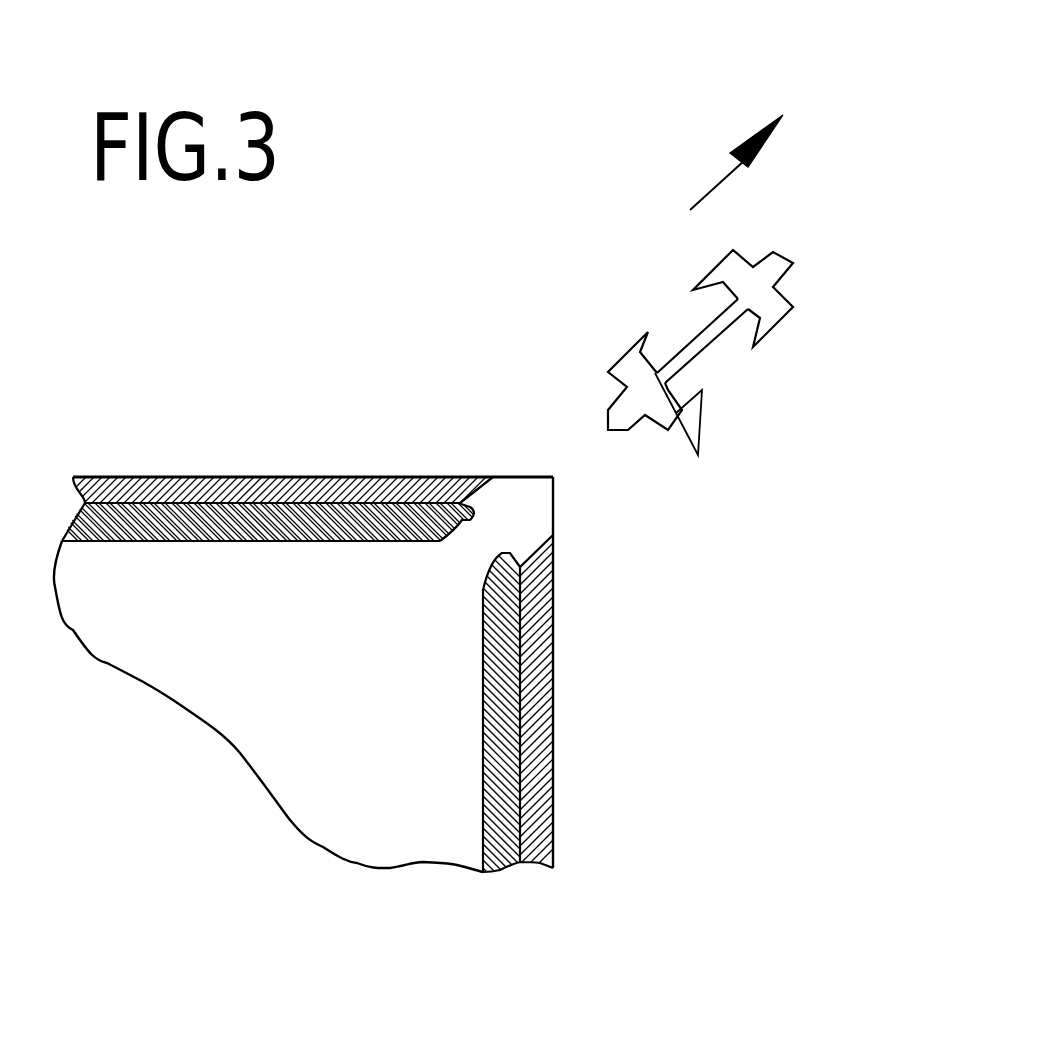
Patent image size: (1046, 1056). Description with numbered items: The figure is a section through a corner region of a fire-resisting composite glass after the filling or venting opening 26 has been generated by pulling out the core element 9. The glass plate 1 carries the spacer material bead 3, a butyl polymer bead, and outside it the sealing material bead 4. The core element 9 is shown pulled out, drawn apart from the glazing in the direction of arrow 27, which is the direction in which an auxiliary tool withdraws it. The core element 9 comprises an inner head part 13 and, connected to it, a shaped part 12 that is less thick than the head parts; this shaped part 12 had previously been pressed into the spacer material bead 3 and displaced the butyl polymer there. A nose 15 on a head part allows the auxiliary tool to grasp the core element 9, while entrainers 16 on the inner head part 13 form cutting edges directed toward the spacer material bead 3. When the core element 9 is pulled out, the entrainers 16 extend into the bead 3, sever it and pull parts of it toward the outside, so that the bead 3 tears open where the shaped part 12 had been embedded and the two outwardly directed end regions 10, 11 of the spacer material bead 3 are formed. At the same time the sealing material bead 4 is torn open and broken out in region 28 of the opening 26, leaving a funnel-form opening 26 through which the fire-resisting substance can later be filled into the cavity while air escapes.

The glass plate 1 is at (352, 825).
The spacer material bead 3 is at (150, 503).
The sealing material bead 4 is at (185, 475).
The core element 9 is at (703, 317).
The end region of the spacer material bead 10 is at (457, 506).
The end region of the spacer material bead 11 is at (552, 593).
The shaped part 12 is at (713, 327).
The inner head part 13 is at (620, 370).
The nose 15 is at (790, 248).
The entrainers 16 is at (703, 442).
The filling or venting opening 26 is at (503, 525).
The arrow 27 is at (748, 150).
The region of the opening 28 is at (483, 480).